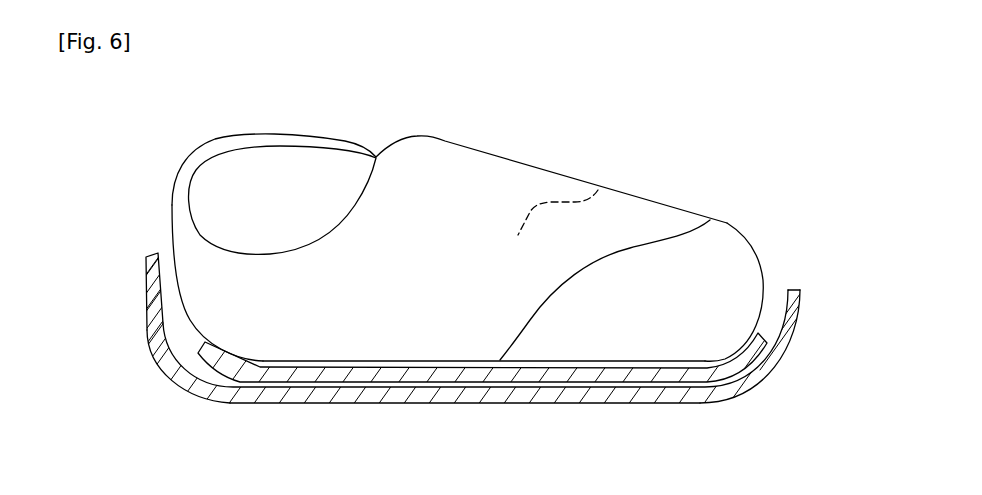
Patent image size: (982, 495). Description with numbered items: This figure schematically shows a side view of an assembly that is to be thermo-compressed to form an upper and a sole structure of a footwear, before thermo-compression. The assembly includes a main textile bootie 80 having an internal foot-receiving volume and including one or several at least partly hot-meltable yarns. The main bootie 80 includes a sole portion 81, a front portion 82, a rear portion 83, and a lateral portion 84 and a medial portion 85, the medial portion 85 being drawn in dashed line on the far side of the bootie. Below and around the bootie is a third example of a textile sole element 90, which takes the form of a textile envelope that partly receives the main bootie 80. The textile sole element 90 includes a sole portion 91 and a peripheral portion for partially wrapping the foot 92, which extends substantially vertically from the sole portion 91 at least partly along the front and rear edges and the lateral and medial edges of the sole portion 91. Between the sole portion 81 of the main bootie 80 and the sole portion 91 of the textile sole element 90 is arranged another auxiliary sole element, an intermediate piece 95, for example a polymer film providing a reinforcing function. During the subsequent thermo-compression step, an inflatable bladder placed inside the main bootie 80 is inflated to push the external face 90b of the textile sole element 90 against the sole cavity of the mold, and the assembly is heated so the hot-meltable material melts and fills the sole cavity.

The main textile bootie 80 is at (490, 152).
The sole portion 81 is at (710, 220).
The front portion 82 is at (753, 250).
The rear portion 83 is at (170, 215).
The lateral portion 84 is at (456, 292).
The medial portion 85 is at (598, 190).
The textile sole element 90 is at (773, 357).
The external face 90b is at (270, 404).
The sole portion 91 is at (580, 394).
The peripheral portion for partially wrapping the foot 92 is at (150, 313).
The intermediate piece 95 is at (660, 375).